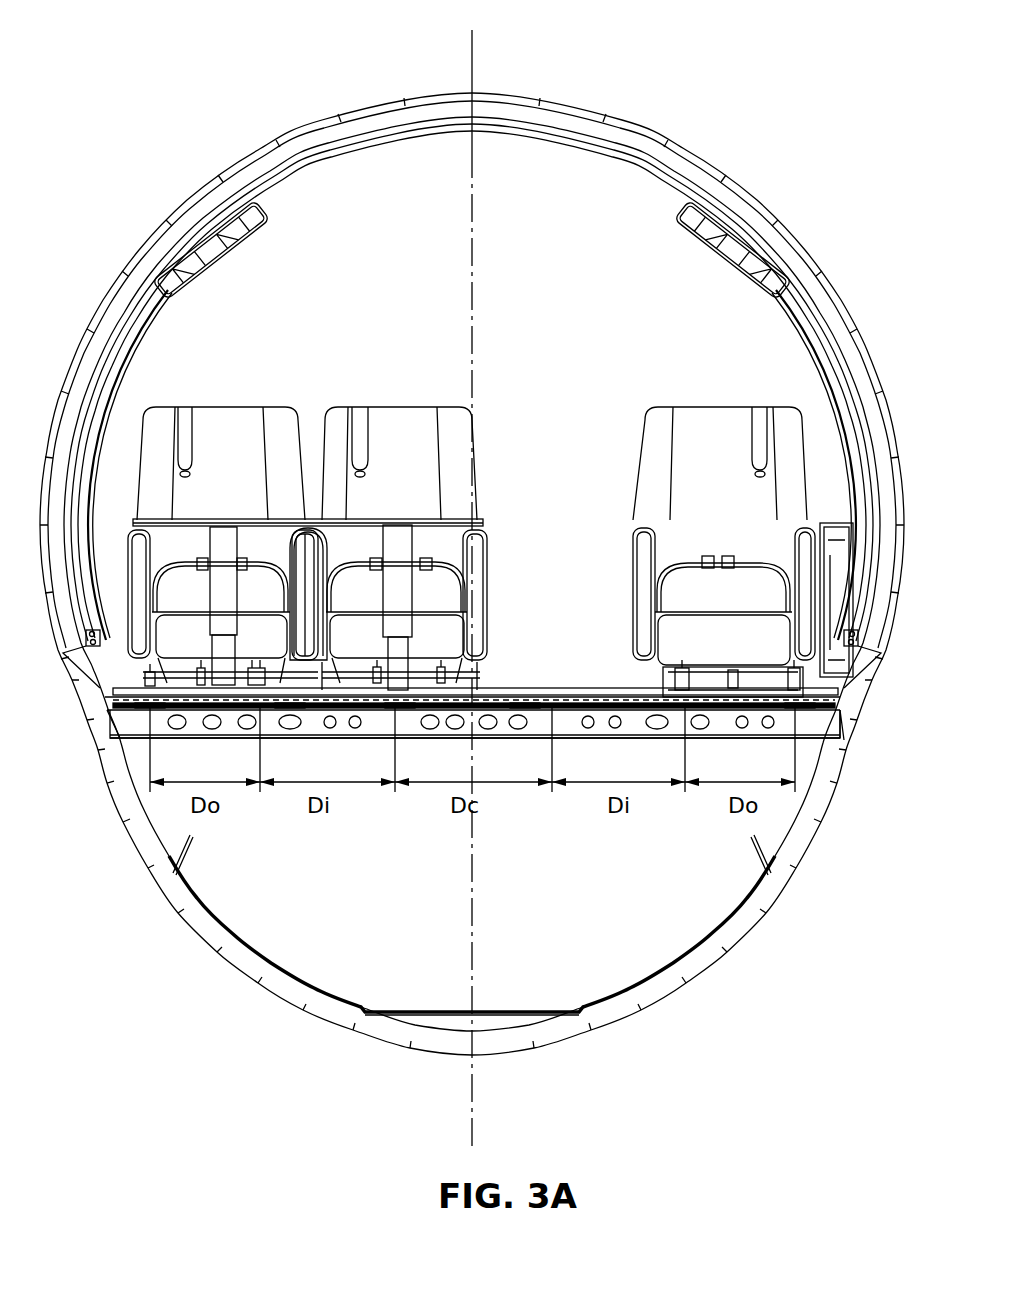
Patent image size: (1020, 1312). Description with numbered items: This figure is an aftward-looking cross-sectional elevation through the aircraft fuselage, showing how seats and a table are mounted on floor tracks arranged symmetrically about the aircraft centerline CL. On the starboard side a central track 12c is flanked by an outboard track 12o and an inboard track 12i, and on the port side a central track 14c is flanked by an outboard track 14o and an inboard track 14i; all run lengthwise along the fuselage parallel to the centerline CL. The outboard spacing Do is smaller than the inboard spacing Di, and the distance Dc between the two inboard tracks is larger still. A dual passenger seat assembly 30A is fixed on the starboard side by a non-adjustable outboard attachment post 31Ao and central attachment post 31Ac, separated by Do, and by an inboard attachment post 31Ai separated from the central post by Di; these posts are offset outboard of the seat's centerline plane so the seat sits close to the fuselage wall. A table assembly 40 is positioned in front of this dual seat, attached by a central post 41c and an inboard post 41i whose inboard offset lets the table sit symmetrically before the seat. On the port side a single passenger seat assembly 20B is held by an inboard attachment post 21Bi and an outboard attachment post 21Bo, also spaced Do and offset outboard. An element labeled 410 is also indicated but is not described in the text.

The dual passenger seat assembly 30A is at (340, 398).
The single passenger seat assembly 20B is at (643, 410).
The table assembly 40 is at (408, 510).
The inboard starboard track 12i is at (395, 700).
The central starboard track 12c is at (282, 700).
The outboard starboard track 12o is at (152, 703).
The inboard port track 14i is at (522, 700).
The central port track 14c is at (685, 677).
The outboard port track 14o is at (800, 706).
The inboard attachment post 21Bi is at (648, 710).
The outboard attachment post 21Bo is at (800, 688).
The inboard attachment post 31Ai is at (413, 710).
The central attachment post 31Ac is at (235, 706).
The outboard attachment post 31Ao is at (140, 680).
The central table attachment post 41c is at (262, 708).
The inboard table attachment post 41i is at (334, 705).
The floor beam structure 410 is at (152, 712).
The aircraft centerline CL is at (470, 61).